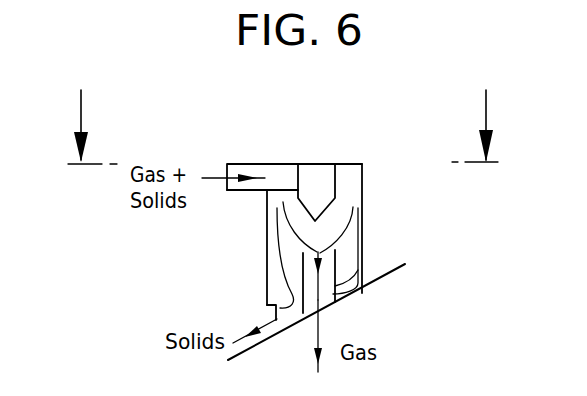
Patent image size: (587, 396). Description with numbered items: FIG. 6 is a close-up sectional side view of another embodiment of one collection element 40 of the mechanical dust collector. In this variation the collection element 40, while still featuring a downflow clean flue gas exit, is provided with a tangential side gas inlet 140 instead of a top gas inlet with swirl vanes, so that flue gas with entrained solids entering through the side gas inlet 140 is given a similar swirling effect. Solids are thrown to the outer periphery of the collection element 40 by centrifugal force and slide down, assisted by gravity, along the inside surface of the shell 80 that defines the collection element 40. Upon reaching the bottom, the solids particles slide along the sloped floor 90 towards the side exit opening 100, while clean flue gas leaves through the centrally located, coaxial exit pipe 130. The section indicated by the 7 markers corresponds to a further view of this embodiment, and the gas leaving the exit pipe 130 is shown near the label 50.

The section line 7- 7 is at (282, 127).
The collection element 40 is at (267, 216).
The gas outlet 50 is at (335, 302).
The shell 80 is at (362, 212).
The sloped floor 90 is at (397, 270).
The side exit opening 100 is at (272, 315).
The coaxial exit pipe 130 is at (335, 259).
The tangential side gas inlet 140 is at (240, 164).